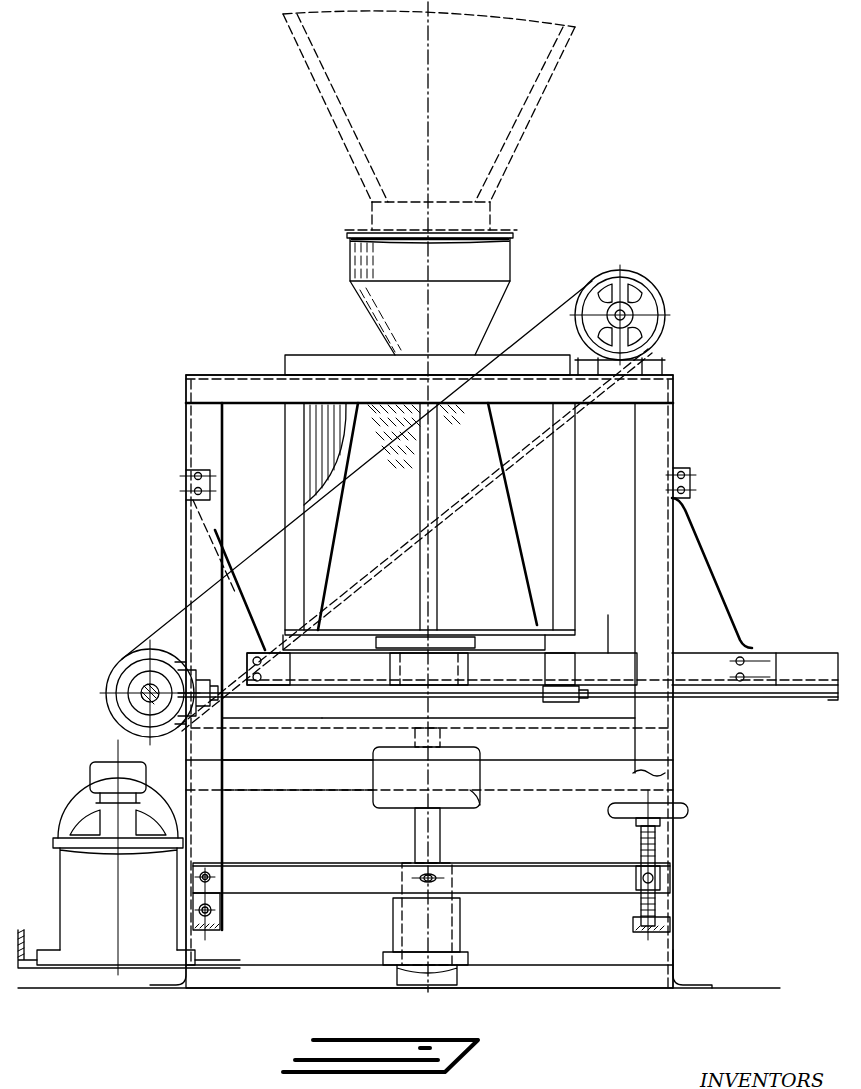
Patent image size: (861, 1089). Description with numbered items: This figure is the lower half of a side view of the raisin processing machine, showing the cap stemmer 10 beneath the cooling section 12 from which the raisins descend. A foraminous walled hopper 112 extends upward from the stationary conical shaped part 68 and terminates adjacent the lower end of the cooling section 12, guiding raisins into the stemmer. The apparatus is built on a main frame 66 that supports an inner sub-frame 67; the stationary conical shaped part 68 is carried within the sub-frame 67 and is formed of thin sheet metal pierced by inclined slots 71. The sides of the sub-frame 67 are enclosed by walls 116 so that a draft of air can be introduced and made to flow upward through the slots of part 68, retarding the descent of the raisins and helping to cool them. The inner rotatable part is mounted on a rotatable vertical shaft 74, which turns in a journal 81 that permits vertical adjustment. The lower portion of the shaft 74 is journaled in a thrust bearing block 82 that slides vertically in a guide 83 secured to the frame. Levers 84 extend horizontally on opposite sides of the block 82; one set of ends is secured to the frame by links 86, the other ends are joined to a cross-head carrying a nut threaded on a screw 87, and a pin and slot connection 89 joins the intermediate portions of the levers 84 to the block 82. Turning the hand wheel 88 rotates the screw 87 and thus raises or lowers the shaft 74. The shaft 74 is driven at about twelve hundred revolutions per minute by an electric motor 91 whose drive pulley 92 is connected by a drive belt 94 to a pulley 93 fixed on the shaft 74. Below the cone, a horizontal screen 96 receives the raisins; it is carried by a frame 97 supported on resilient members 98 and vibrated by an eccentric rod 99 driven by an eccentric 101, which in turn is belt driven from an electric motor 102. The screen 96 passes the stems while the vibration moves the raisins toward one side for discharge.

The cap stemmer 10 is at (174, 544).
The cooling section 12 is at (526, 151).
The foraminous walled hopper 112 is at (508, 264).
The electric motor 102 is at (650, 300).
The main frame 66 is at (674, 429).
The sub-frame 67 is at (574, 513).
The stationary conical shaped part 68 is at (496, 477).
The inclined slots 71 is at (372, 426).
The walls 116 is at (302, 467).
The resilient members 98 is at (258, 612).
The eccentric 101 is at (128, 702).
The eccentric rod 99 is at (280, 700).
The journal 81 is at (448, 706).
The horizontal screen 96 is at (606, 690).
The frame 97 is at (718, 688).
The drive pulley 92 is at (104, 760).
The electric motor 91 is at (62, 856).
The drive belt 94 is at (271, 784).
The pulley 93 is at (372, 803).
The rotatable vertical shaft 74 is at (414, 828).
The pin and slot connection 89 is at (432, 872).
The levers 84 is at (510, 864).
The thrust bearing block 82 is at (455, 879).
The guide 83 is at (461, 915).
The links 86 is at (221, 908).
The hand wheel 88 is at (686, 806).
The screw 87 is at (656, 860).